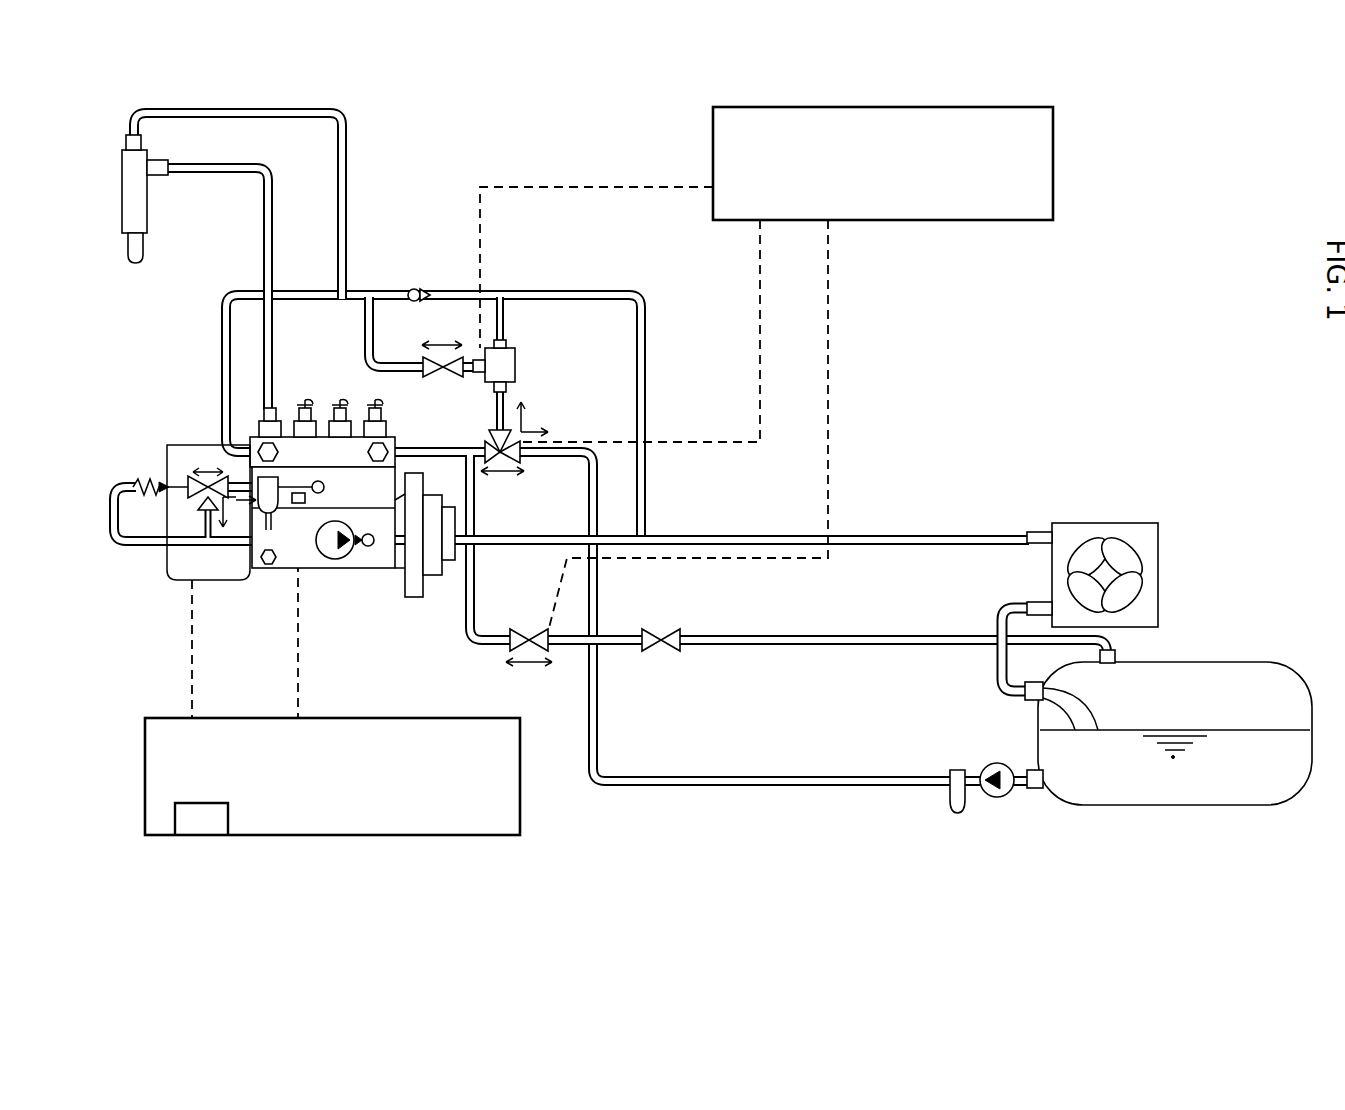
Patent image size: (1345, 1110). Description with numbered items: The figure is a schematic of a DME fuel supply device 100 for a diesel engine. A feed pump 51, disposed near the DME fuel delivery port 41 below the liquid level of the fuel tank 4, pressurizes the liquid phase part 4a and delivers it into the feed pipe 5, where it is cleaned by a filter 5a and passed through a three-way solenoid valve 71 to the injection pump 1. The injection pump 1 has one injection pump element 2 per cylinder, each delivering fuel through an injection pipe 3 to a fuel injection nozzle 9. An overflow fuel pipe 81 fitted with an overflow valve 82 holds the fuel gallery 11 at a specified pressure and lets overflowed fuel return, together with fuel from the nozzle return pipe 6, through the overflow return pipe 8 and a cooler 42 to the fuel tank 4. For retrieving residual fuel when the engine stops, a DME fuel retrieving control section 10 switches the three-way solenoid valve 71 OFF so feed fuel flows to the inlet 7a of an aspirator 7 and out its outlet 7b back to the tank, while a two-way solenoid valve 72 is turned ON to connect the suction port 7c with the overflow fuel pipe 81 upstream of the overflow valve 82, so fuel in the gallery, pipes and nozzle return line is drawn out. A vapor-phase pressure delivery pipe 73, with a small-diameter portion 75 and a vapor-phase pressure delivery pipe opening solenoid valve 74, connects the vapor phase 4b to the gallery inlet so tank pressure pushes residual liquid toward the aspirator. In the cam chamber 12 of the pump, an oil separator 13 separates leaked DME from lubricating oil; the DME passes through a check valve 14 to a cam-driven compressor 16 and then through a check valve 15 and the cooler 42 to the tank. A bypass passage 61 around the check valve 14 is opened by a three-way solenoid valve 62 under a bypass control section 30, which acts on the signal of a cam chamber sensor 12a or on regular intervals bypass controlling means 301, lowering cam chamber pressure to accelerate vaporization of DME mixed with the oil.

The injection pump 1 is at (329, 518).
The injection pump element 2 is at (260, 426).
The injection pipe 3 is at (278, 184).
The fuel tank 4 is at (1168, 724).
The liquid phase part 4a is at (1190, 791).
The vapor phase 4b is at (1228, 680).
The feed pipe 5 is at (750, 788).
The filter 5a is at (957, 815).
The nozzle return pipe 6 is at (287, 108).
The aspirator 7 is at (530, 368).
The inlet 7a is at (508, 390).
The outlet 7b is at (507, 343).
The suction port 7c is at (478, 374).
The overflow return pipe 8 is at (887, 534).
The fuel injection nozzle 9 is at (120, 178).
The DME fuel retrieving control section 10 is at (800, 107).
The fuel gallery 11 is at (352, 450).
The cam chamber 12 is at (355, 560).
The cam chamber sensor 12a is at (296, 505).
The oil separator 13 is at (262, 508).
The check valve 14 is at (134, 482).
The check valve 15 is at (372, 548).
The compressor 16 is at (335, 548).
The bypass control section 30 is at (333, 815).
The regular intervals bypass controlling means 301 is at (200, 830).
The DME fuel delivery port 41 is at (1042, 790).
The cooler 42 is at (1160, 548).
The feed pump 51 is at (998, 798).
The bypass passage 61 is at (174, 544).
The three-way solenoid valve 62 is at (197, 493).
The three-way solenoid valve 71 is at (526, 460).
The two-way solenoid valve 72 is at (447, 379).
The vapor-phase pressure delivery pipe 73 is at (888, 636).
The vapor-phase pressure delivery pipe opening solenoid valve 74 is at (524, 628).
The small-diameter portion 75 is at (662, 628).
The overflow fuel pipe 81 is at (571, 288).
The overflow valve 82 is at (416, 287).
The DME fuel supply device 100 is at (925, 336).